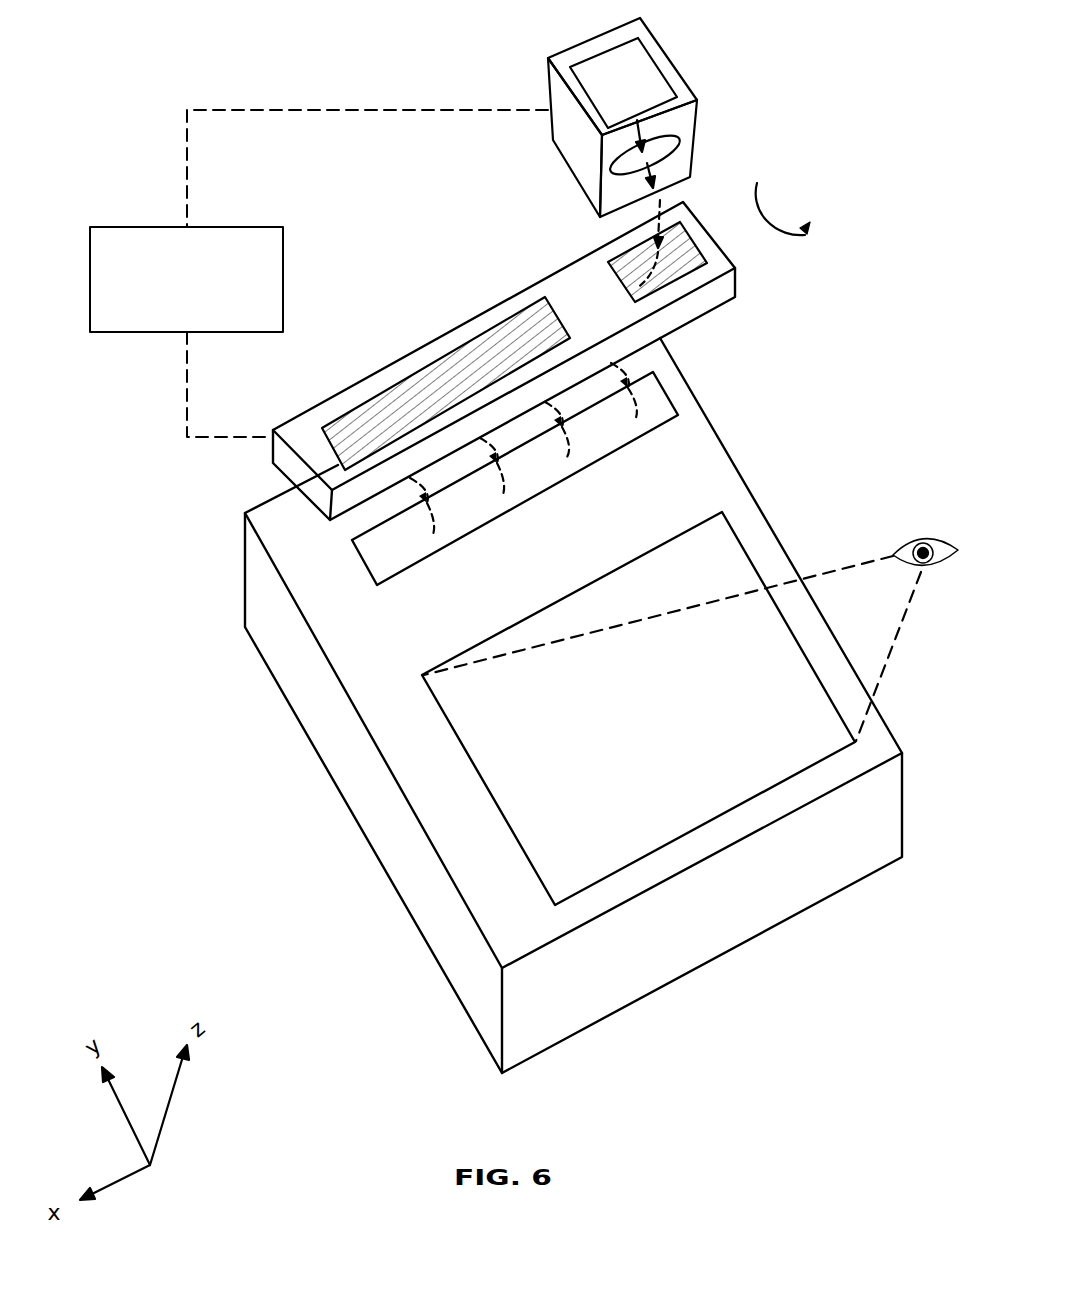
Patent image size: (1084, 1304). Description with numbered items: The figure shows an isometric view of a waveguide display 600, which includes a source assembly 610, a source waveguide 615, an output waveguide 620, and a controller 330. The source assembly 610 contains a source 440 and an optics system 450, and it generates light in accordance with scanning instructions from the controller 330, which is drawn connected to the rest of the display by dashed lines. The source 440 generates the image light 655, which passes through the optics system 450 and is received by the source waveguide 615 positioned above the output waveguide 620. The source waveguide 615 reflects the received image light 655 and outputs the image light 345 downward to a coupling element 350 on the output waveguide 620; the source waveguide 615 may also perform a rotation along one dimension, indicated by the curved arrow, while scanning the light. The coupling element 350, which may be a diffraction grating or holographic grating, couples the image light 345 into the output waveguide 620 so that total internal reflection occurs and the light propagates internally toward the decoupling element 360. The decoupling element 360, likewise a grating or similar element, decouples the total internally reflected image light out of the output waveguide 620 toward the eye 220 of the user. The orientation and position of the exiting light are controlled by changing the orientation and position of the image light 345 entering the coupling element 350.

The waveguide display 600 is at (68, 102).
The controller 330 is at (166, 307).
The source 440 is at (625, 62).
The source assembly 610 is at (693, 148).
The optics system 450 is at (623, 163).
The image light 655 is at (657, 198).
The source waveguide 615 is at (300, 483).
The output waveguide 620 is at (420, 823).
The coupling element 350 is at (365, 565).
The image light 345 is at (633, 405).
The decoupling element 360 is at (538, 893).
The eye 220 is at (899, 523).